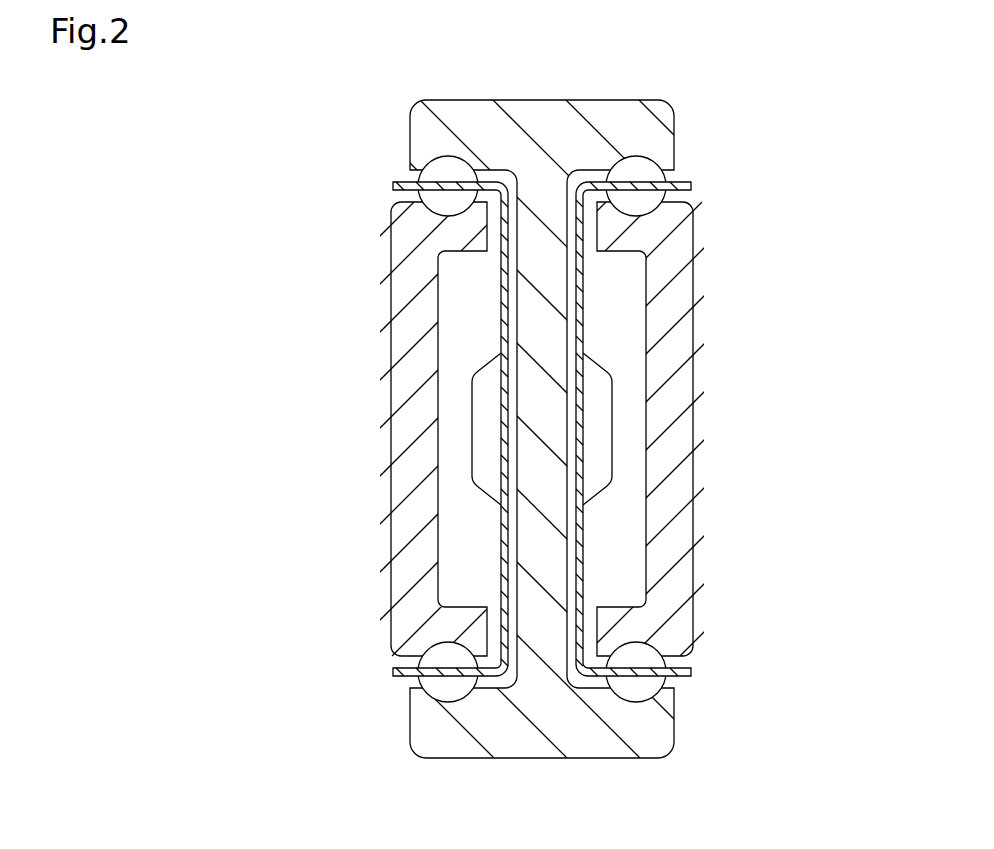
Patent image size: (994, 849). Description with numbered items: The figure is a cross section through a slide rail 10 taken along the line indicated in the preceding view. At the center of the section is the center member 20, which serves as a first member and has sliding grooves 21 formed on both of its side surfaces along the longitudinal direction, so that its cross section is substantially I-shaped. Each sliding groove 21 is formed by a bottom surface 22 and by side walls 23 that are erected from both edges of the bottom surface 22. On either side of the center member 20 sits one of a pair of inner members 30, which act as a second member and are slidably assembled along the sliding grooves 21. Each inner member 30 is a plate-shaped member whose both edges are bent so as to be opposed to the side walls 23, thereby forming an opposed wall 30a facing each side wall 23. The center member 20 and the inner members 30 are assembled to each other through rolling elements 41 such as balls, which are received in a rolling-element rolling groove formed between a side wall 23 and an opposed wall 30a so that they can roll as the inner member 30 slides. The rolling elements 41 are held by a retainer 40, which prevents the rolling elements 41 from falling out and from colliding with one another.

The slide rail 10 is at (779, 48).
The center member 20 is at (664, 101).
The sliding groove 21 is at (470, 332).
The bottom surface 22 is at (517, 432).
The side wall 23 is at (445, 128).
The inner member 30 is at (392, 527).
The opposed wall 30a is at (457, 228).
The retainer 40 is at (400, 677).
The rolling element 41 is at (443, 689).